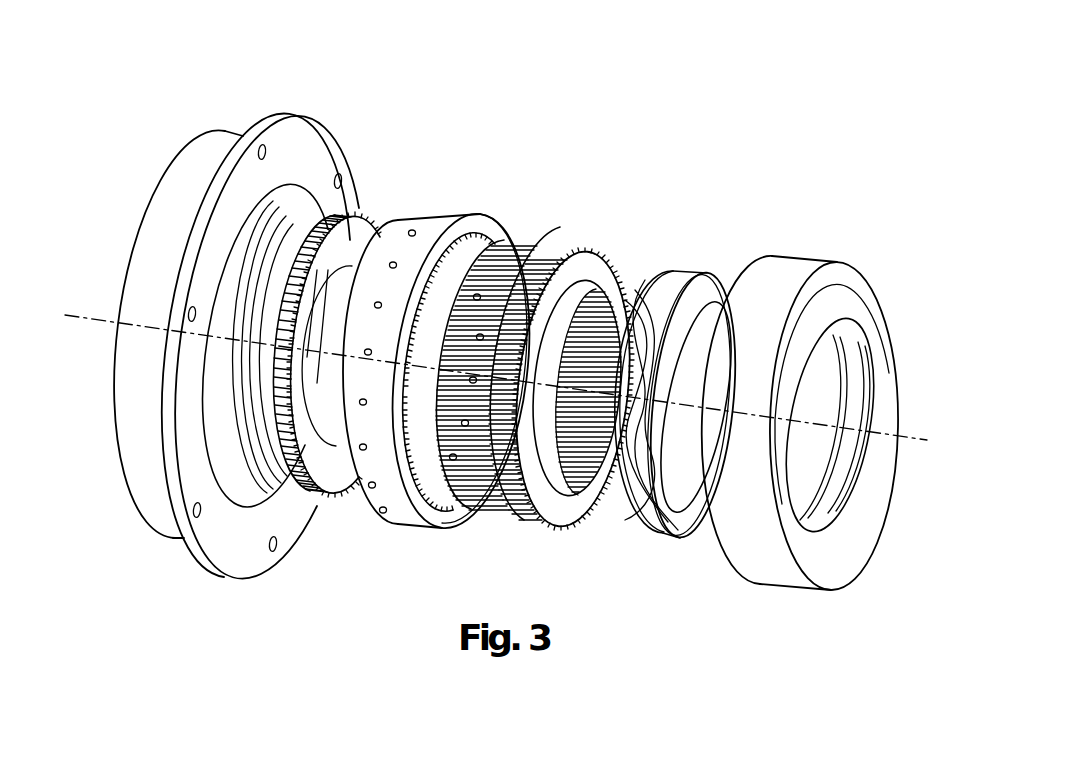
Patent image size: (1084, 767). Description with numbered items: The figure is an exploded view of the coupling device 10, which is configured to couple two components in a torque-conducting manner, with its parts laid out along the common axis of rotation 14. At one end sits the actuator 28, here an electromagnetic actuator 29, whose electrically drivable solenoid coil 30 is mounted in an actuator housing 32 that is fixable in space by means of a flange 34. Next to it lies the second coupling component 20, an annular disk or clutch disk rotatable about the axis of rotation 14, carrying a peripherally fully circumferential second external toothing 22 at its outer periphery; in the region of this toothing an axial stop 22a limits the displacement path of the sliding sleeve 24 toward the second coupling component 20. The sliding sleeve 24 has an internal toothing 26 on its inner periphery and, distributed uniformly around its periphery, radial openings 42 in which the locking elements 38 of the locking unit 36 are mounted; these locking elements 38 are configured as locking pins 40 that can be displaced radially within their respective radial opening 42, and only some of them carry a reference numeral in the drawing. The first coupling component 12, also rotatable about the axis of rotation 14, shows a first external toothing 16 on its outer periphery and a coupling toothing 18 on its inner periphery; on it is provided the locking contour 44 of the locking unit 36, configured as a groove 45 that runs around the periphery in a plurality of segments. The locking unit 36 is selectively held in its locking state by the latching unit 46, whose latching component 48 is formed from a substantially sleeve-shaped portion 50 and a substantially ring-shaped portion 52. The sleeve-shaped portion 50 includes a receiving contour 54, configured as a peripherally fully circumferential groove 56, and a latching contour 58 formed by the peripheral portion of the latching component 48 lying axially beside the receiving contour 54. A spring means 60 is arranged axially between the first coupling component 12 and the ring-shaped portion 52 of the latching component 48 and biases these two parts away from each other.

The coupling device 10 is at (742, 118).
The first coupling component 12 is at (590, 267).
The axis of rotation 14 is at (918, 440).
The first external toothing 16 is at (541, 243).
The coupling toothing 18 is at (610, 435).
The second coupling component 20 is at (372, 218).
The second external toothing 22 is at (331, 208).
The axial stop 22a is at (273, 360).
The sliding sleeve 24 is at (416, 232).
The internal toothing 26 is at (500, 250).
The actuator 28 is at (205, 120).
The electromagnetic actuator 29 is at (202, 305).
The solenoid coil 30 is at (250, 482).
The actuator housing 32 is at (172, 203).
The flange 34 is at (300, 133).
The locking unit 36 is at (516, 131).
The locking elements 38 is at (364, 450).
The locking pins 40 is at (373, 487).
The radial openings 42 is at (472, 262).
The locking contour 44 is at (572, 243).
The groove 45 is at (577, 334).
The latching unit 46 is at (804, 212).
The latching component 48 is at (866, 268).
The substantially sleeve-shaped portion 50 is at (805, 283).
The substantially ring-shaped portion 52 is at (862, 312).
The receiving contour 54 is at (830, 488).
The groove 56 is at (870, 484).
The latching contour 58 is at (851, 455).
The spring means 60 is at (707, 268).